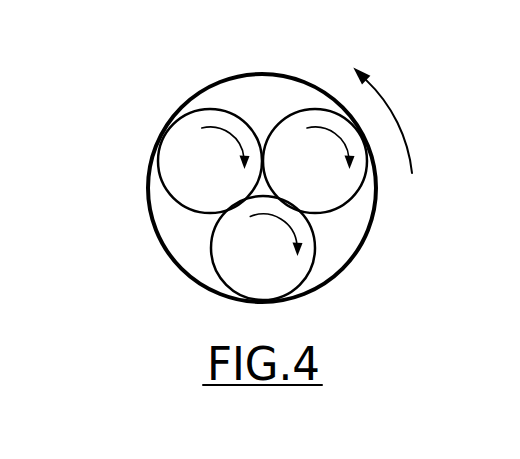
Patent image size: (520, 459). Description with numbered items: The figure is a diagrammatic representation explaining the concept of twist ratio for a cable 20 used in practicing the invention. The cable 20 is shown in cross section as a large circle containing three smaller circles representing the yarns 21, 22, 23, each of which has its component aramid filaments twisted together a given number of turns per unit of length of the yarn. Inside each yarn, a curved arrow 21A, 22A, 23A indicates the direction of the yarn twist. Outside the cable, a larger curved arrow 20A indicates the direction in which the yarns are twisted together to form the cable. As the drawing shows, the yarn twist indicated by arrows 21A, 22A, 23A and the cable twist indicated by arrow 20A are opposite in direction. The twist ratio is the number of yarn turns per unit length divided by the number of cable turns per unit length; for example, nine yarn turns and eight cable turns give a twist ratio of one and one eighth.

The cable 20 is at (113, 94).
The arrow indicating cable twist 20A is at (405, 140).
The yarn 21 is at (162, 192).
The arrow indicating yarn twist 21A is at (213, 128).
The yarn 22 is at (353, 193).
The arrow indicating yarn twist 22A is at (320, 126).
The yarn 23 is at (213, 267).
The arrow indicating yarn twist 23A is at (300, 232).